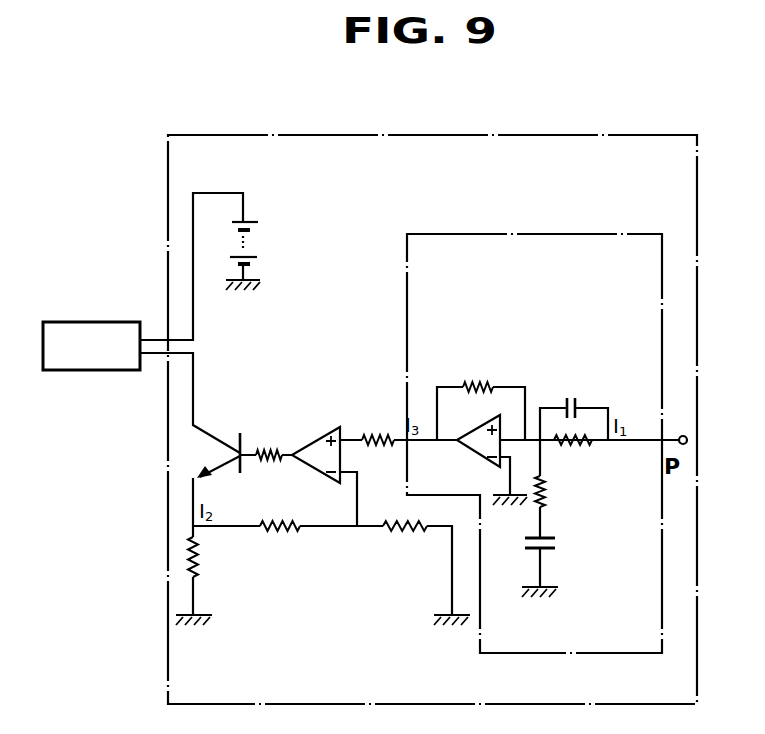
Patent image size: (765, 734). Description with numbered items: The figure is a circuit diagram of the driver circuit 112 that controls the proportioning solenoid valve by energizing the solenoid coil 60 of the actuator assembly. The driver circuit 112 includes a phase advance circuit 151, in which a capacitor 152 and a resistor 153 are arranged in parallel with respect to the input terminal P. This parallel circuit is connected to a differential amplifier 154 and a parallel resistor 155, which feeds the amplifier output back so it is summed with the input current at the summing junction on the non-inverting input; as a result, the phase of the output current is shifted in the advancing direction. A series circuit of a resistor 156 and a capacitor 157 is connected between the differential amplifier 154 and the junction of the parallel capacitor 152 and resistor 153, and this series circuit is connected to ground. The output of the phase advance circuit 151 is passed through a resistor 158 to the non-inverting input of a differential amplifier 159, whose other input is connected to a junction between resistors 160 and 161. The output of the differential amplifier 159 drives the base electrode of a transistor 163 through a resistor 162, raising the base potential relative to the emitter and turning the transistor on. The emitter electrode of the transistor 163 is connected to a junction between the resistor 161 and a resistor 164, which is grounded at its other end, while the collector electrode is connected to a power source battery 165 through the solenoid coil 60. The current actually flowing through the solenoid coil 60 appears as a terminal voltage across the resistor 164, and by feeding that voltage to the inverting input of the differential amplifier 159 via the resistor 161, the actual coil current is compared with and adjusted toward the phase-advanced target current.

The driver circuit 112 is at (338, 132).
The phase advance circuit 151 is at (503, 230).
The solenoid coil 60 is at (85, 320).
The power source battery 165 is at (252, 238).
The transistor 163 is at (215, 434).
The resistor 162 is at (270, 452).
The differential amplifier 159 is at (311, 437).
The resistor 158 is at (375, 434).
The differential amplifier 154 is at (486, 458).
The parallel resistor 155 is at (483, 382).
The capacitor 152 is at (580, 406).
The resistor 153 is at (570, 446).
The resistor 156 is at (546, 497).
The capacitor 157 is at (550, 547).
The resistor 161 is at (290, 531).
The resistor 160 is at (398, 531).
The resistor 164 is at (199, 565).